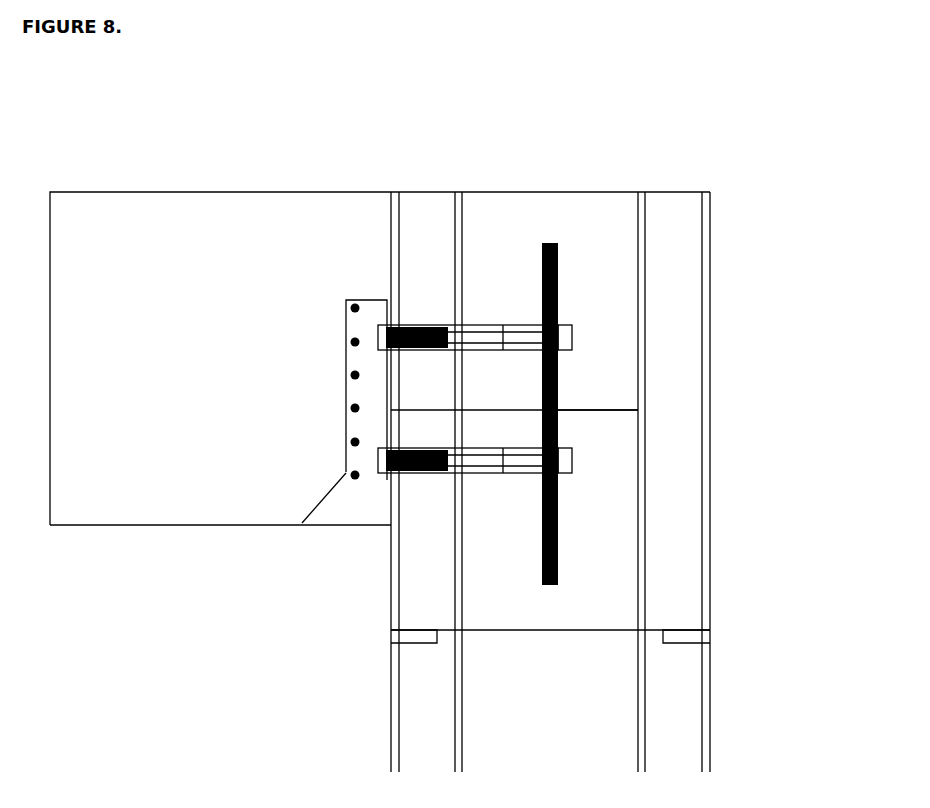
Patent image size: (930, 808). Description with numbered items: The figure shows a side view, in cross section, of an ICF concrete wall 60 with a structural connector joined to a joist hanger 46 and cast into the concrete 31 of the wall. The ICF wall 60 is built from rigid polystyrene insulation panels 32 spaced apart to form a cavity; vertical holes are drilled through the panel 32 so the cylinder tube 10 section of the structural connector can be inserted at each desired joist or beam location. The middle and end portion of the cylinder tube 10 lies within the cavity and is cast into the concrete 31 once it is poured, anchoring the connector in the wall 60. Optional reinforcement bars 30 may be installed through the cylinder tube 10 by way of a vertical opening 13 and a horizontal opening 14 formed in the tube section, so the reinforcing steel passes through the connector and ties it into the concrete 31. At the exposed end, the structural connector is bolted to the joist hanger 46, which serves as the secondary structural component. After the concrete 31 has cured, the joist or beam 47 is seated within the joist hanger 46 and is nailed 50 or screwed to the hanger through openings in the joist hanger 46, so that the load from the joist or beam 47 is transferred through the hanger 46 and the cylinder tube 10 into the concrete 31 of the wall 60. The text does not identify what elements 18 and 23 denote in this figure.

The cylinder tube 10 is at (523, 324).
The vertical opening 13 is at (545, 345).
The horizontal opening 14 is at (553, 335).
The threaded anchor rod 18 is at (481, 322).
The end plate 23 is at (376, 338).
The reinforcement bar 30 is at (559, 432).
The concrete 31 is at (618, 190).
The polystyrene panel 32 is at (690, 273).
The joist hanger 46 is at (378, 528).
The joist or beam 47 is at (263, 226).
The nail 50 is at (342, 452).
The ICF concrete wall 60 is at (384, 482).